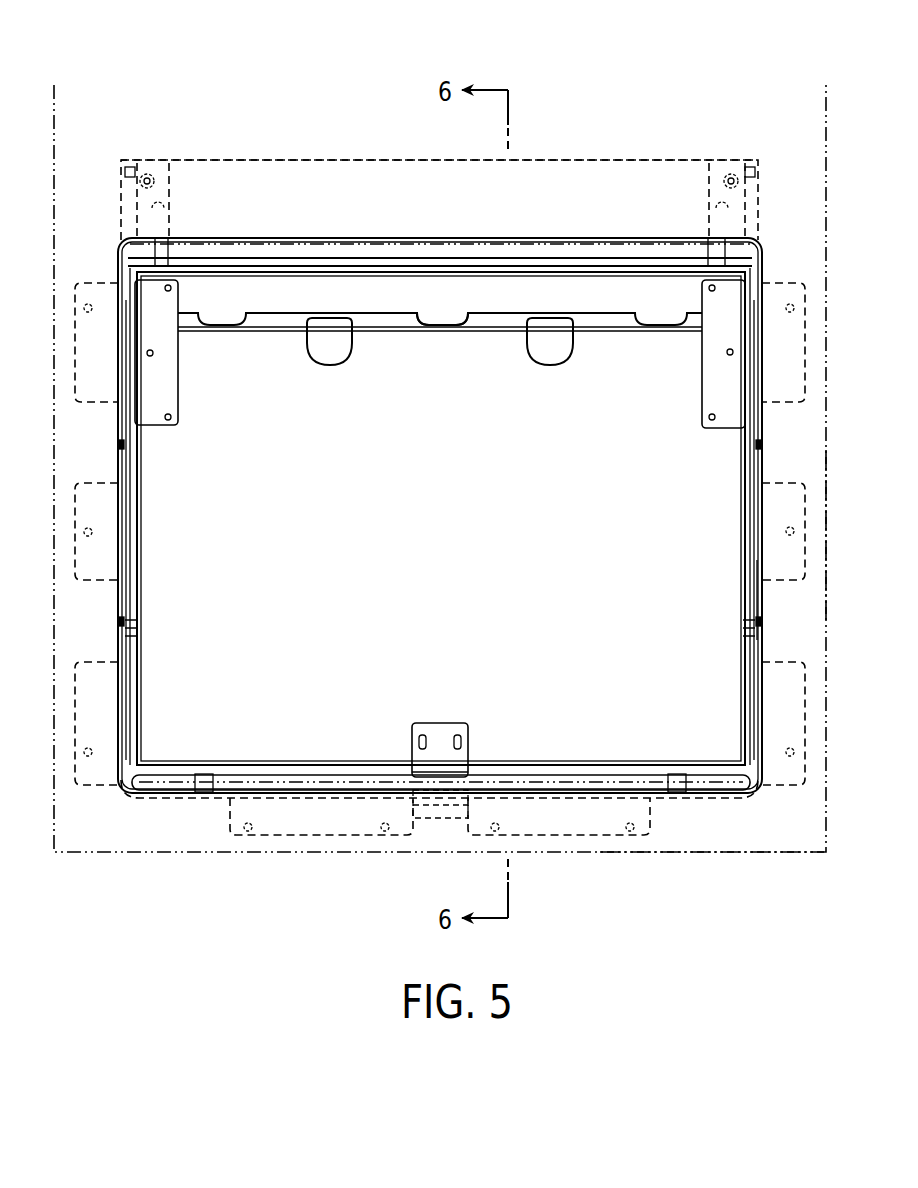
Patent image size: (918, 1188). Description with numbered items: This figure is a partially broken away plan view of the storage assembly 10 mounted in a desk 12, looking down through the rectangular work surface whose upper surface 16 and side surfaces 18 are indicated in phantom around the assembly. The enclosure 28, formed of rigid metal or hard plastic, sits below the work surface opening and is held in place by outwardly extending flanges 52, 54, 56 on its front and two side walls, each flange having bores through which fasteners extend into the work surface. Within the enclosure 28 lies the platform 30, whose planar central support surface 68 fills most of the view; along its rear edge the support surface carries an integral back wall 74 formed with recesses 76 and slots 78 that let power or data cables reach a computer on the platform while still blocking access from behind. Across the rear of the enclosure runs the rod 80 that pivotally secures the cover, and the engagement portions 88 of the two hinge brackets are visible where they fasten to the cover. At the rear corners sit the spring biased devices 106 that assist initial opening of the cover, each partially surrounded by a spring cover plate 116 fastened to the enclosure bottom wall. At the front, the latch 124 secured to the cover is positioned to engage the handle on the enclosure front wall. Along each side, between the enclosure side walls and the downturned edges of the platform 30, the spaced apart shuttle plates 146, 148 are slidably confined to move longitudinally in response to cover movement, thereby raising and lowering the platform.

The storage assembly 10 is at (728, 84).
The desk 12 is at (786, 856).
The upper surface 16 is at (728, 840).
The side surfaces 18 is at (828, 556).
The enclosure 28 is at (766, 600).
The platform 30 is at (714, 445).
The flange 52 is at (311, 822).
The flange 54 is at (94, 292).
The flange 56 is at (793, 292).
The central support surface 68 is at (441, 518).
The back wall 74 is at (505, 322).
The recess 76 is at (560, 357).
The slot 78 is at (440, 322).
The rod 80 is at (348, 265).
The engagement portion 88 is at (175, 391).
The spring biased device 106 is at (160, 166).
The spring cover plate 116 is at (169, 214).
The latch 124 is at (471, 719).
The shuttle plate 146 is at (130, 513).
The shuttle plate 148 is at (748, 561).